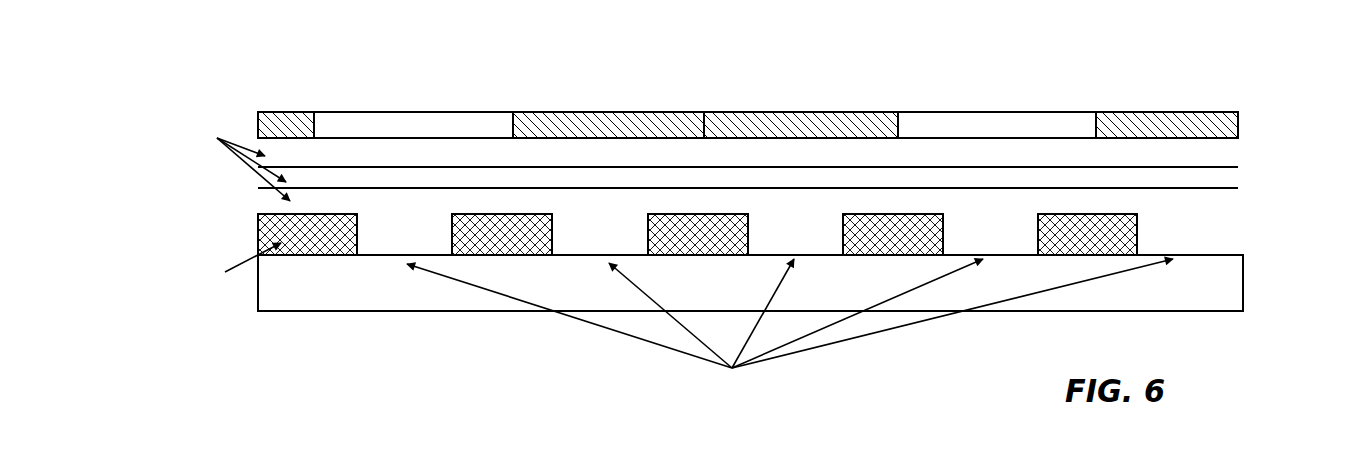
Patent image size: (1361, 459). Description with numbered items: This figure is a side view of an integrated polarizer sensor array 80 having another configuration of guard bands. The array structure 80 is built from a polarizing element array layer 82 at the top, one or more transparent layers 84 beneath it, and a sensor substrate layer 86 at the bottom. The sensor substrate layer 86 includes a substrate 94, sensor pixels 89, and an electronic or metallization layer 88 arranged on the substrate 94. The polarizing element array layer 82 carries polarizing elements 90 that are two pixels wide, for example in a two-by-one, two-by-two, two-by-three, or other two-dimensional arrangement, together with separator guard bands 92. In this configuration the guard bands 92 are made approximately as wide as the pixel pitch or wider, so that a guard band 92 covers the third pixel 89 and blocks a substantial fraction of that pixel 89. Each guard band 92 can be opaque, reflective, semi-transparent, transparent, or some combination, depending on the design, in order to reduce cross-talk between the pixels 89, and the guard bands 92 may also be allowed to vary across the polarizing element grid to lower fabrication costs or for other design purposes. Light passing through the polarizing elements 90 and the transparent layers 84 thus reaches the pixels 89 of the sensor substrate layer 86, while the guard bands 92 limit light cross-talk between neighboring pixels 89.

The integrated polarizer sensor array 80 is at (1206, 42).
The polarizing element array layer 82 is at (788, 103).
The transparent layers 84 is at (1253, 181).
The sensor substrate layer 86 is at (1258, 268).
The electronic or metallization layer 88 is at (258, 225).
The sensor pixel 89 is at (383, 242).
The polarizing element 90 is at (655, 111).
The separator guard band 92 is at (460, 111).
The substrate 94 is at (1193, 311).